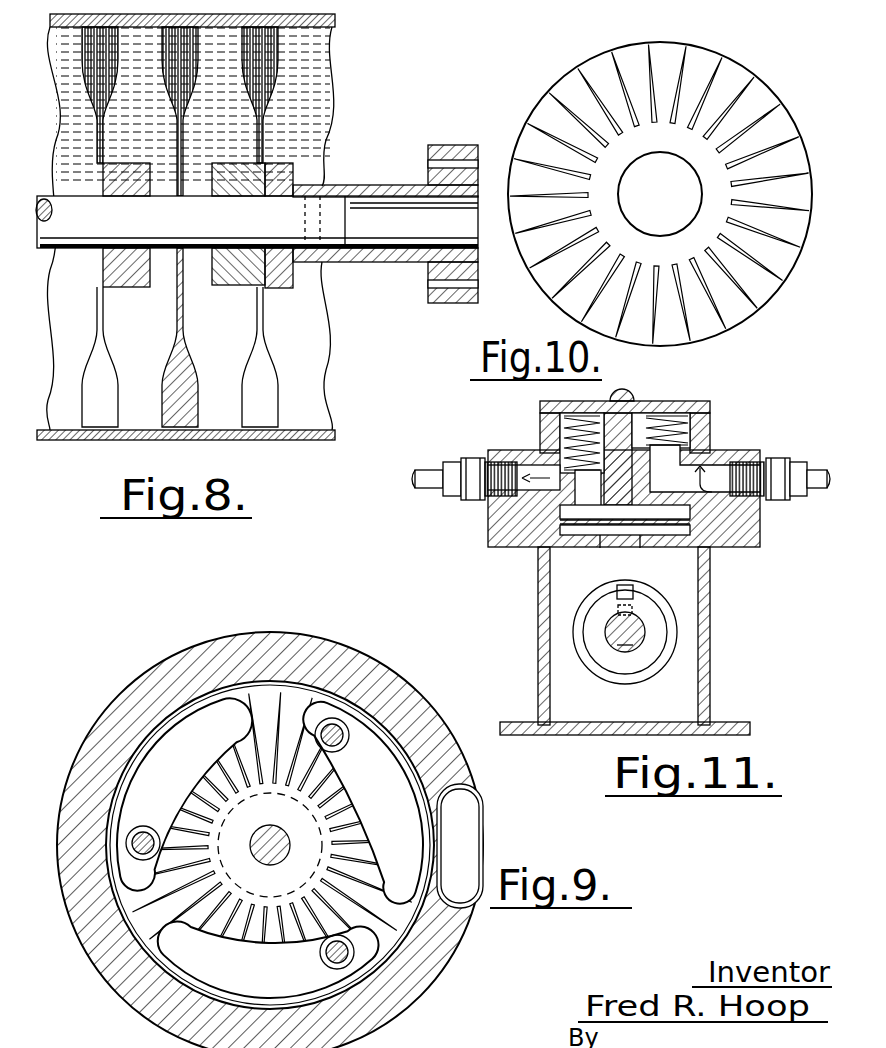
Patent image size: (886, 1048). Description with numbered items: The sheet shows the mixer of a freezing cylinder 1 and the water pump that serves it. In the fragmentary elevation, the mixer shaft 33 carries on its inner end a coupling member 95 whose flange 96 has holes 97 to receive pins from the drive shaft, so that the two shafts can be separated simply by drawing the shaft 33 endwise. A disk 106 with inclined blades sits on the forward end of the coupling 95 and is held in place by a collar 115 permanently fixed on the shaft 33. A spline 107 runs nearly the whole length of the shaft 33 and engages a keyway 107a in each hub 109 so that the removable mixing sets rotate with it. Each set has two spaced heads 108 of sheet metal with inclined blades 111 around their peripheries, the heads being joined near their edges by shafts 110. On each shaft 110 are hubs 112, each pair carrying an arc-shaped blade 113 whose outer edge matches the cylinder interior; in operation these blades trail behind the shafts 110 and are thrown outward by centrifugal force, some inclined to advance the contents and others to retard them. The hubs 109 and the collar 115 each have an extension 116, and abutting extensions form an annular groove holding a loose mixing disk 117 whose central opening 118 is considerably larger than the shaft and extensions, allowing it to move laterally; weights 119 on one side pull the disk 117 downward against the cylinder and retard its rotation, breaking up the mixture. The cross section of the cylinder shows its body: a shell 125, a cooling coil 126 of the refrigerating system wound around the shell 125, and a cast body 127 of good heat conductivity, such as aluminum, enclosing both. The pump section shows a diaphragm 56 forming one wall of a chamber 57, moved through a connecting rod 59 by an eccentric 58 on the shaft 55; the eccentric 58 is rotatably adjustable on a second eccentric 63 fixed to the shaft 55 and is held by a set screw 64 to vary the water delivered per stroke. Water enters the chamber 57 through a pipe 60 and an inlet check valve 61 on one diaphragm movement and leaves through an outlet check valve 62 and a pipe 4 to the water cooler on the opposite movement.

In FIG. 9, the freezing cylinder 1 is at (145, 886).
In FIG. 11, the pipe 4 is at (440, 474).
In FIG. 8, the mixer shaft 33 is at (72, 222).
In FIG. 9, the mixer shaft 33 is at (268, 852).
In FIG. 11, the shaft 55 is at (616, 648).
In FIG. 11, the diaphragm 56 is at (695, 530).
In FIG. 11, the chamber 57 is at (535, 508).
In FIG. 11, the eccentric 58 is at (600, 612).
In FIG. 11, the connecting rod 59 is at (622, 548).
In FIG. 11, the pipe 60 is at (818, 470).
In FIG. 11, the inlet check valve 61 is at (672, 440).
In FIG. 11, the outlet check valve 62 is at (580, 468).
In FIG. 11, the eccentric 63 is at (648, 630).
In FIG. 11, the set screw 64 is at (634, 588).
In FIG. 8, the coupling member 95 is at (410, 190).
In FIG. 8, the flange 96 is at (446, 146).
In FIG. 8, the holes 97 is at (478, 164).
In FIG. 8, the disk 106 is at (80, 198).
In FIG. 8, the spline 107 is at (180, 111).
In FIG. 9, the keyway 107a is at (268, 824).
In FIG. 8, the heads 108 is at (104, 290).
In FIG. 9, the heads 108 is at (415, 912).
In FIG. 8, the hub 109 is at (130, 278).
In FIG. 9, the hub 109 is at (283, 906).
In FIG. 9, the shafts 110 is at (148, 840).
In FIG. 8, the inclined blades 111 is at (100, 392).
In FIG. 9, the inclined blades 111 is at (282, 704).
In FIG. 9, the hubs 112 is at (328, 748).
In FIG. 9, the blade 113 is at (270, 848).
In FIG. 8, the collar 115 is at (246, 285).
In FIG. 8, the extension 116 is at (170, 272).
In FIG. 8, the loose mixing disk 117 is at (178, 330).
In FIG. 10, the loose mixing disk 117 is at (660, 194).
In FIG. 8, the central opening 118 is at (180, 270).
In FIG. 10, the central opening 118 is at (682, 230).
In FIG. 8, the weights 119 is at (180, 410).
In FIG. 10, the weights 119 is at (636, 336).
In FIG. 8, the shell 125 is at (276, 440).
In FIG. 9, the shell 125 is at (392, 958).
In FIG. 9, the cooling coil 126 is at (462, 830).
In FIG. 9, the body 127 is at (425, 724).